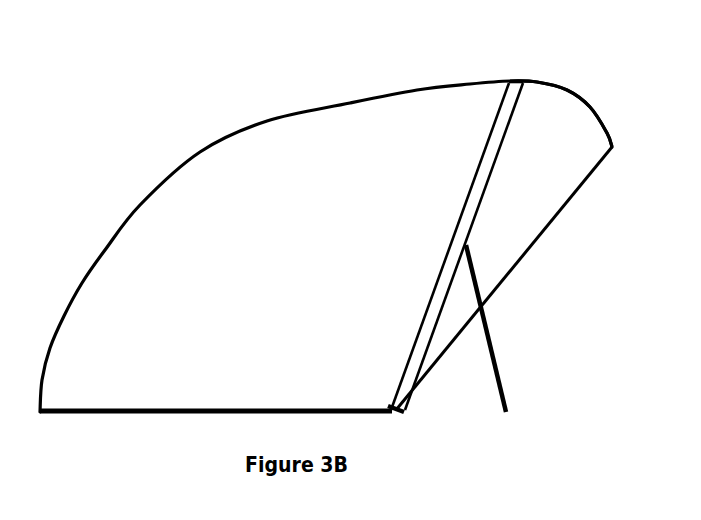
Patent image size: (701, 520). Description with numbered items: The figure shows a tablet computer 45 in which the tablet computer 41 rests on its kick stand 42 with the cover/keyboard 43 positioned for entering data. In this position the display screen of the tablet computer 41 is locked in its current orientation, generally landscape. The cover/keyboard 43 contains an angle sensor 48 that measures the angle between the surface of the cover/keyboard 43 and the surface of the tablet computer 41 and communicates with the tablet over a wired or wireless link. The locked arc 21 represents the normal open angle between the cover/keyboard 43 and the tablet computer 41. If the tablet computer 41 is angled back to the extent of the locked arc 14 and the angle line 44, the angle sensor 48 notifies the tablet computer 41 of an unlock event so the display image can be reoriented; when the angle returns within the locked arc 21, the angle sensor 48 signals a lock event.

The locked arc 14 is at (572, 78).
The locked arc 21 is at (70, 268).
The tablet computer 41 is at (445, 217).
The kick stand 42 is at (520, 387).
The cover/keyboard 43 is at (208, 395).
The angle line 44 is at (578, 212).
The tablet computer 45 is at (273, 28).
The angle sensor 48 is at (388, 430).